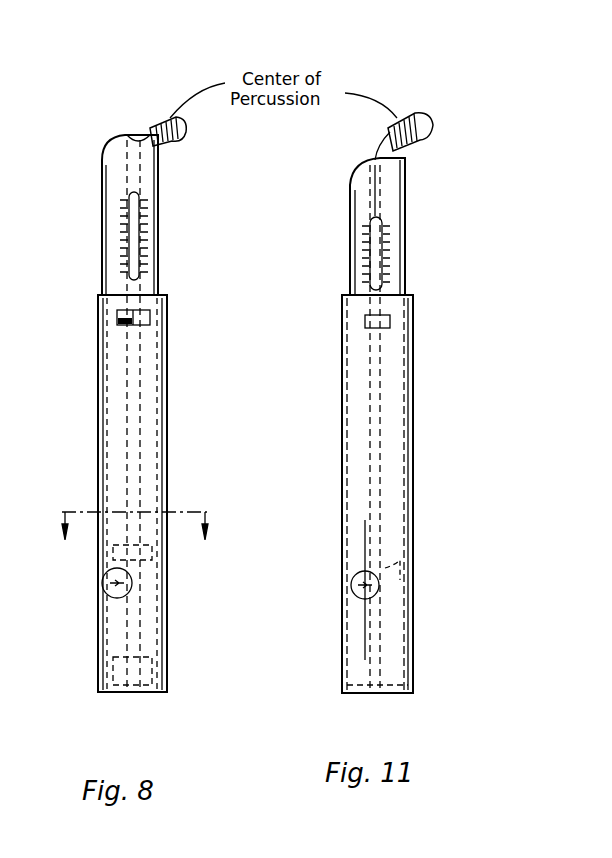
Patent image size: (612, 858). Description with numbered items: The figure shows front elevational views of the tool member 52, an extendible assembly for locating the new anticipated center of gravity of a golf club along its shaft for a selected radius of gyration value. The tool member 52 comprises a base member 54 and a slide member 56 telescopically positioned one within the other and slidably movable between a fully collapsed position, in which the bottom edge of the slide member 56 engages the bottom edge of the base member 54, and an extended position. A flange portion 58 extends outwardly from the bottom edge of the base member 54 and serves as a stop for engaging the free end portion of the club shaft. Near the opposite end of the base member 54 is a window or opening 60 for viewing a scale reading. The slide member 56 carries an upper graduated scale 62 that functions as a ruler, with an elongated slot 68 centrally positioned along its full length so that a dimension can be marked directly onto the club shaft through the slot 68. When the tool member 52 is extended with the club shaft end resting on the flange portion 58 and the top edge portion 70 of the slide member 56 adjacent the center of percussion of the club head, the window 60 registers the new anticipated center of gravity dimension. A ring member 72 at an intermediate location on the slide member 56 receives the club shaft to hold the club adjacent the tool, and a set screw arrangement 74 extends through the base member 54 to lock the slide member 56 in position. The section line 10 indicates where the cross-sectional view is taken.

In FIG. 8, the section line 10- 10 is at (134, 520).
In FIG. 8, the tool member 52 is at (173, 398).
In FIG. 11, the tool member 52 is at (419, 396).
In FIG. 8, the base member 54 is at (150, 672).
In FIG. 11, the base member 54 is at (395, 645).
In FIG. 8, the slide member 56 is at (117, 180).
In FIG. 11, the slide member 56 is at (395, 202).
In FIG. 8, the flange portion 58 is at (115, 695).
In FIG. 8, the window or opening 60 is at (152, 318).
In FIG. 11, the window or opening 60 is at (392, 318).
In FIG. 8, the upper graduated scale 62 is at (147, 233).
In FIG. 11, the upper graduated scale 62 is at (389, 248).
In FIG. 11, the elongated slot or opening 68 is at (375, 217).
In FIG. 8, the top edge portion of the slide member 70 is at (125, 132).
In FIG. 11, the top edge portion of the slide member 70 is at (400, 158).
In FIG. 8, the ring member 72 is at (178, 568).
In FIG. 11, the ring member 72 is at (412, 560).
In FIG. 8, the set screw arrangement 74 is at (108, 604).
In FIG. 11, the set screw arrangement 74 is at (350, 586).